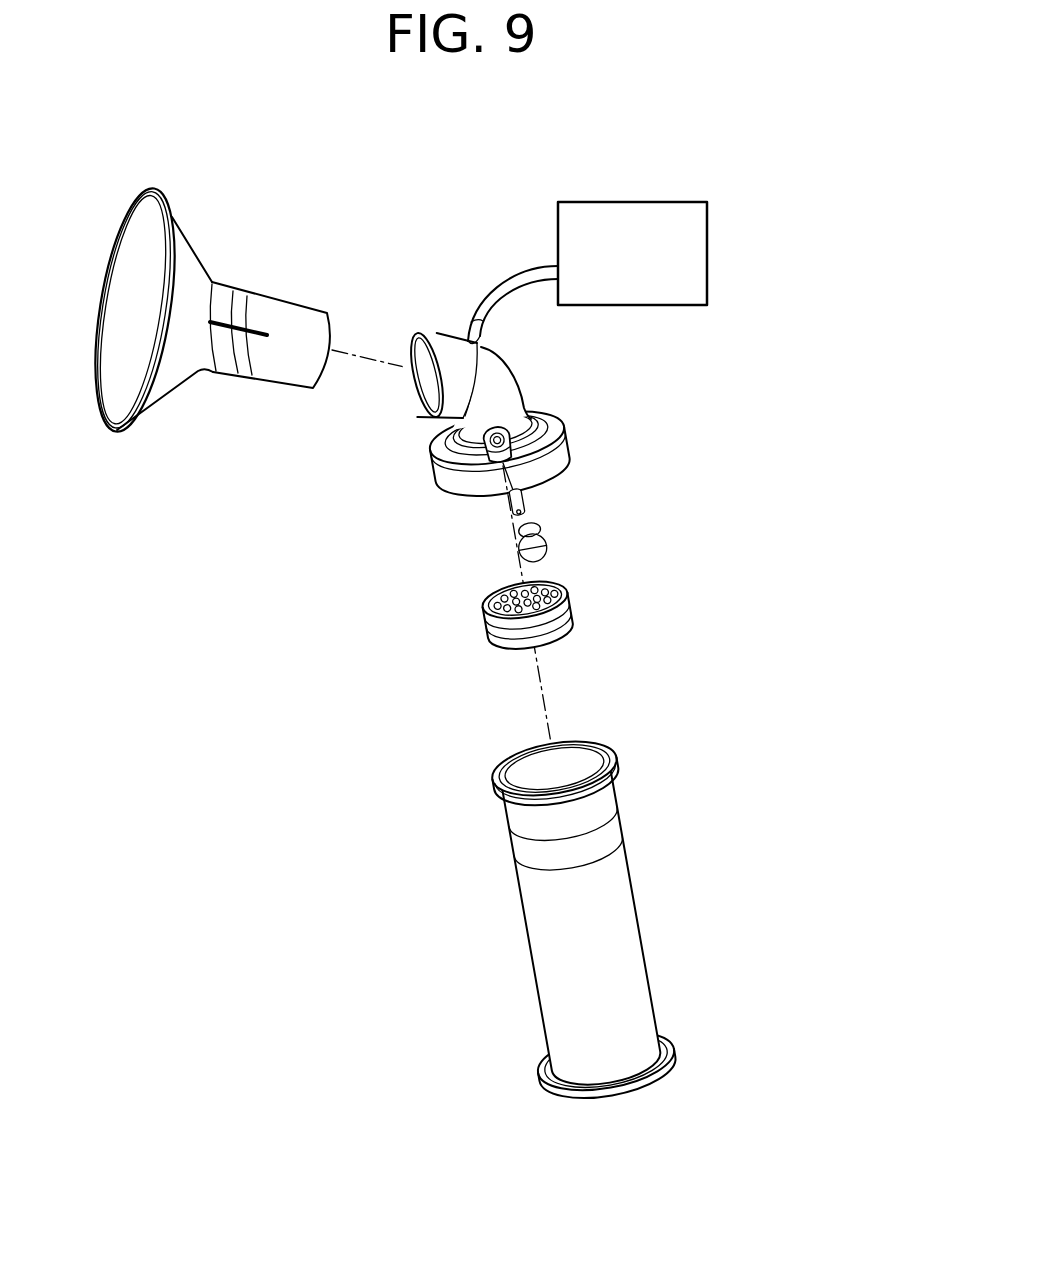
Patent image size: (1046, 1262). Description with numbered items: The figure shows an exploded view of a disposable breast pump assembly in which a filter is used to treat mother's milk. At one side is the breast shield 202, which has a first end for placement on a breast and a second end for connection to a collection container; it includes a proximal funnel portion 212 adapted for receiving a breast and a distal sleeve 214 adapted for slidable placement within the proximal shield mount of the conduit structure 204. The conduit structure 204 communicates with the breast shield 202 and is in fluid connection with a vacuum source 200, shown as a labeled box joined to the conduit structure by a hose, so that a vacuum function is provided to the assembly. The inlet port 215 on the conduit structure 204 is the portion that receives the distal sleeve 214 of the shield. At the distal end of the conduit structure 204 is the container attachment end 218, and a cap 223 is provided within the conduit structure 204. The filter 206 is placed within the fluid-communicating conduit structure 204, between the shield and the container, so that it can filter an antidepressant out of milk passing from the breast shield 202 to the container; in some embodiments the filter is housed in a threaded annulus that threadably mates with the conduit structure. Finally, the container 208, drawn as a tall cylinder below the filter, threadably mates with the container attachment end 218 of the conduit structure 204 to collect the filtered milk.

The vacuum source 200 is at (650, 202).
The breast shield 202 is at (213, 320).
The conduit structure 204 is at (540, 403).
The filter 206 is at (573, 600).
The container 208 is at (637, 850).
The proximal funnel portion 212 is at (162, 381).
The distal sleeve 214 is at (262, 363).
The inlet port 215 is at (422, 413).
The container attachment end 218 is at (573, 460).
The cap 223 is at (556, 428).